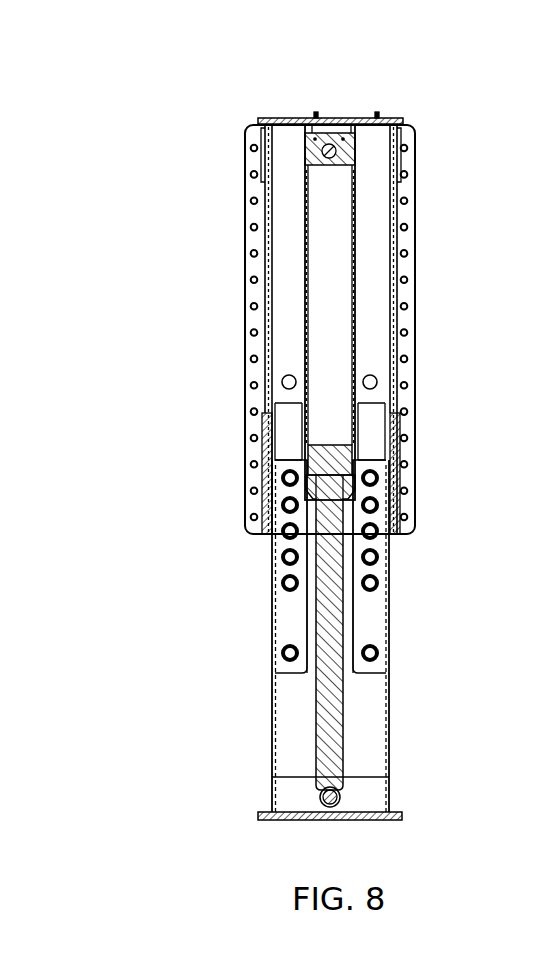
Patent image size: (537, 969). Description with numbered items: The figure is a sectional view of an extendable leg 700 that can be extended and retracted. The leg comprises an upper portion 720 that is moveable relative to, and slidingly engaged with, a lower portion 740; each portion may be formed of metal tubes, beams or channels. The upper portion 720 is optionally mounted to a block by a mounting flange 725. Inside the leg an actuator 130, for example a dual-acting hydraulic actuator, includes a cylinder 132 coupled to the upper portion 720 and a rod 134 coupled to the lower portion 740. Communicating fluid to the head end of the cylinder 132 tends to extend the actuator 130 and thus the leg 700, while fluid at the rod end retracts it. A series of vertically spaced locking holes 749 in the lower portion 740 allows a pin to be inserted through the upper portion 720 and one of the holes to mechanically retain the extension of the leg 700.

The extendable leg 700 is at (133, 86).
The upper portion 720 is at (272, 320).
The mounting flange 725 is at (415, 340).
The actuator 130 is at (359, 248).
The cylinder 132 is at (303, 296).
The rod 134 is at (317, 742).
The lower portion 740 is at (390, 693).
The locking holes 749 is at (290, 593).